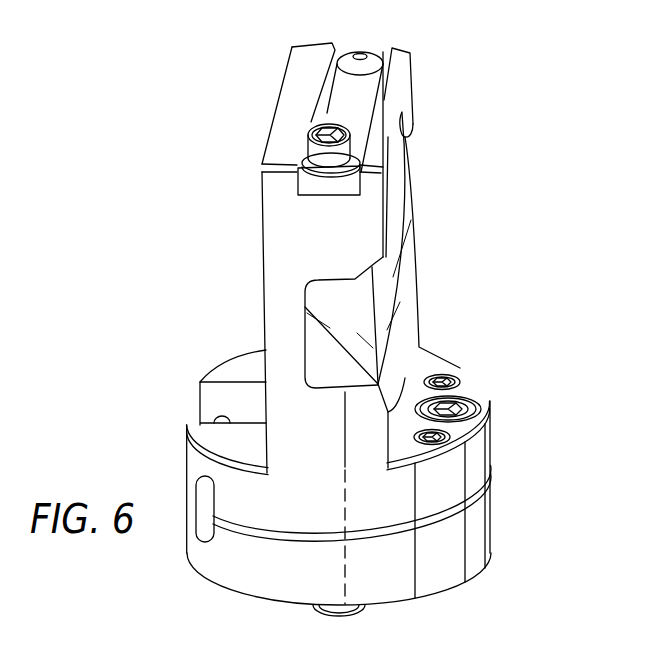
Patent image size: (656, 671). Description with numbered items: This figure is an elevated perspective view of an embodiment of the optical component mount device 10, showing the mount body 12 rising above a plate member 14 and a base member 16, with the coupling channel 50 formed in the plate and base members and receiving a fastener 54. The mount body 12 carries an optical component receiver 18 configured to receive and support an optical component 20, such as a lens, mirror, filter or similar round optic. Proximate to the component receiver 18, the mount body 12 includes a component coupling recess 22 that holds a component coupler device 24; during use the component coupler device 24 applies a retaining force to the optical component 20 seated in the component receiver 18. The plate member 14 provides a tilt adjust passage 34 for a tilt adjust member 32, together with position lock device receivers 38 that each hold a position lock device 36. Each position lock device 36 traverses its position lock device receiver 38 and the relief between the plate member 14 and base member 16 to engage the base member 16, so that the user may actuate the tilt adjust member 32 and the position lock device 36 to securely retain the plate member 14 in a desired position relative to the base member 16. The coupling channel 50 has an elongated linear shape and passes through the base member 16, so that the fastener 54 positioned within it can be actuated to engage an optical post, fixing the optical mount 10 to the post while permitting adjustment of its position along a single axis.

The optical component mount device 10 is at (522, 190).
The mount body 12 is at (277, 332).
The plate member 14 is at (480, 450).
The base member 16 is at (475, 513).
The optical component receiver 18 is at (290, 283).
The optical component 20 is at (402, 280).
The component coupling recess 22 is at (363, 88).
The component coupler device 24 is at (343, 108).
The tilt adjust member 32 is at (478, 406).
The tilt adjust passage 34 is at (470, 400).
The position lock device 36 is at (454, 396).
The position lock device receiver 38 is at (440, 373).
The coupling channel 50 is at (214, 398).
The fastener 54 is at (333, 607).